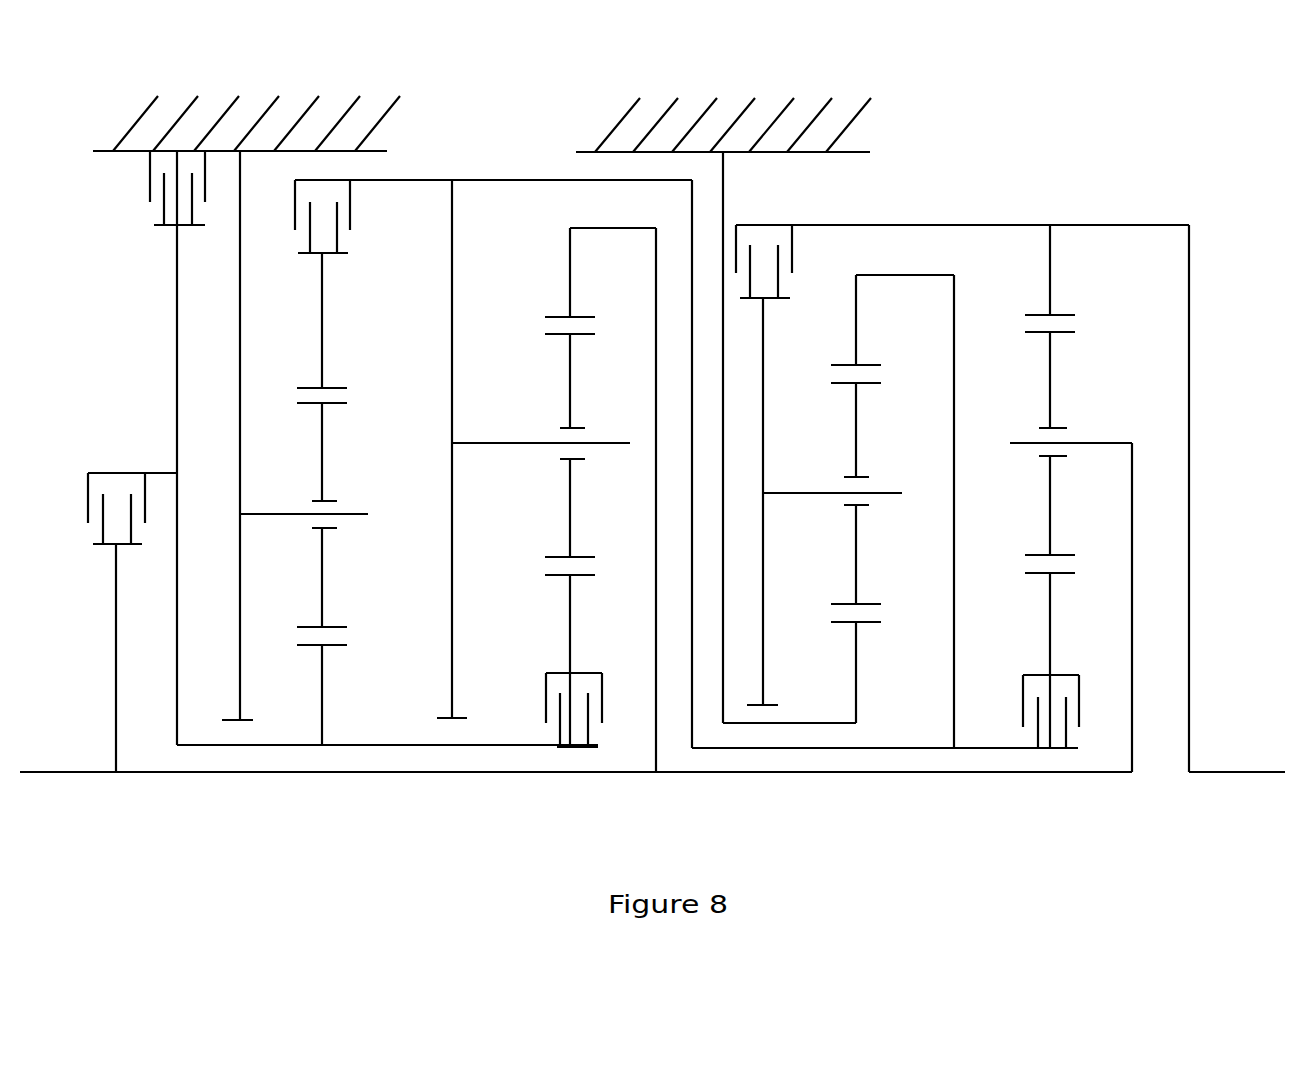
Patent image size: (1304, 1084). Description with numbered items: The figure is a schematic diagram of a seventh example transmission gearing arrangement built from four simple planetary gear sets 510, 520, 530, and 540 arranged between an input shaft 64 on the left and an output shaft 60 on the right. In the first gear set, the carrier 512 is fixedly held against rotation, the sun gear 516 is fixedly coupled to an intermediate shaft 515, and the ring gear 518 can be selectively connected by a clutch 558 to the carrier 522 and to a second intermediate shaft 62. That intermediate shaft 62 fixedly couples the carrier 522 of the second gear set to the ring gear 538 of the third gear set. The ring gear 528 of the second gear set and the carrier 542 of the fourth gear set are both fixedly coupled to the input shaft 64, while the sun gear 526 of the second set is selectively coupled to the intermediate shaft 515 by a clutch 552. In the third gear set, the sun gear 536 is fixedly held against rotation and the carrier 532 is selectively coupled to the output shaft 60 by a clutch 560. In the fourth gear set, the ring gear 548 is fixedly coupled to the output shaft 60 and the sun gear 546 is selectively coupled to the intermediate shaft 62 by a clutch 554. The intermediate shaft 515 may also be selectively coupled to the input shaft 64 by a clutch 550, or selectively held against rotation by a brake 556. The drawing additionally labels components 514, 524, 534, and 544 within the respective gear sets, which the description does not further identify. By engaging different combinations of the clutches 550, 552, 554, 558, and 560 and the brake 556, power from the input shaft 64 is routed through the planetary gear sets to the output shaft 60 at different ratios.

The output shaft 60 is at (1247, 770).
The intermediate shaft 62 is at (907, 750).
The input shaft 64 is at (233, 772).
The planetary gear set 510 is at (387, 786).
The carrier 512 is at (242, 530).
The planet gear 514 is at (327, 467).
The intermediate shaft 515 is at (408, 745).
The sun gear 516 is at (322, 683).
The ring gear 518 is at (320, 352).
The planetary gear set 520 is at (618, 504).
The carrier 522 is at (452, 415).
The planet gear 524 is at (573, 390).
The sun gear 526 is at (570, 613).
The ring gear 528 is at (567, 282).
The planetary gear set 530 is at (885, 490).
The carrier 532 is at (800, 492).
The planet gear 534 is at (858, 438).
The sun gear 536 is at (853, 660).
The ring gear 538 is at (857, 328).
The planetary gear set 540 is at (1098, 529).
The carrier 542 is at (1123, 443).
The planet gear 544 is at (1053, 388).
The sun gear 546 is at (1050, 610).
The ring gear 548 is at (1052, 280).
The clutch 550 is at (125, 473).
The clutch 552 is at (545, 713).
The clutch 554 is at (1022, 717).
The brake 556 is at (150, 180).
The clutch 558 is at (350, 202).
The clutch 560 is at (778, 225).